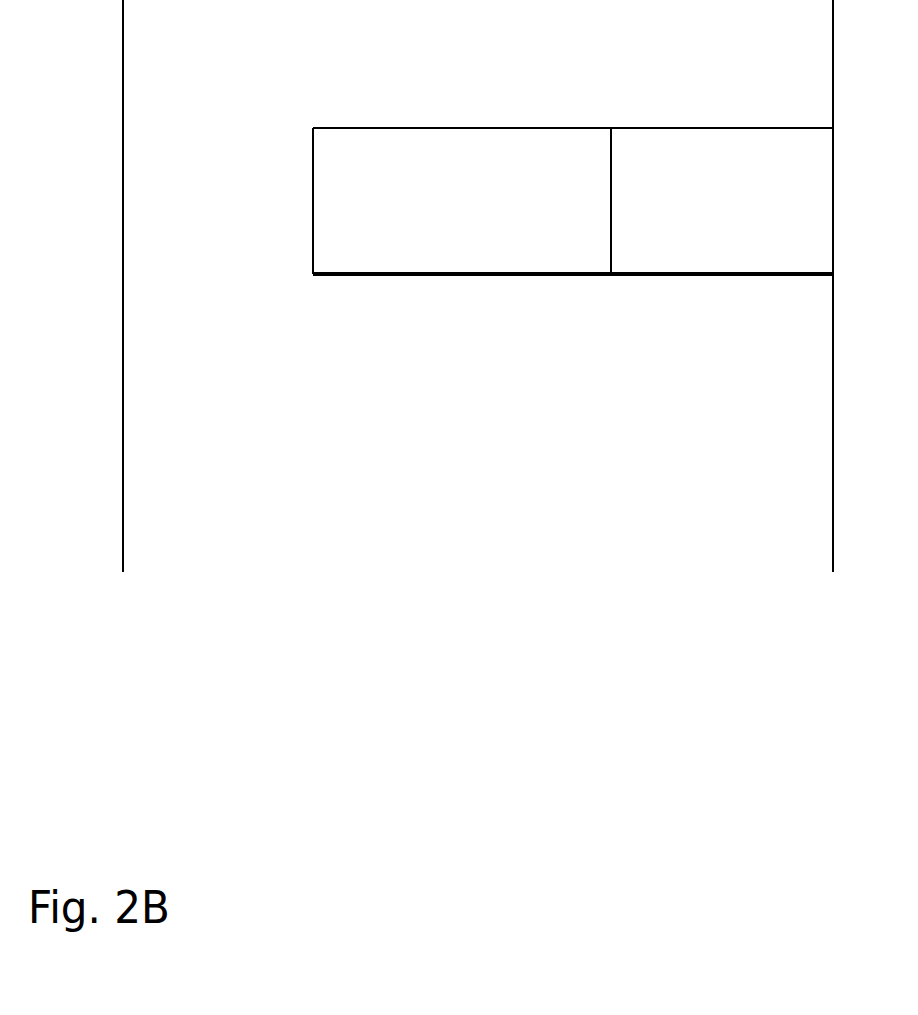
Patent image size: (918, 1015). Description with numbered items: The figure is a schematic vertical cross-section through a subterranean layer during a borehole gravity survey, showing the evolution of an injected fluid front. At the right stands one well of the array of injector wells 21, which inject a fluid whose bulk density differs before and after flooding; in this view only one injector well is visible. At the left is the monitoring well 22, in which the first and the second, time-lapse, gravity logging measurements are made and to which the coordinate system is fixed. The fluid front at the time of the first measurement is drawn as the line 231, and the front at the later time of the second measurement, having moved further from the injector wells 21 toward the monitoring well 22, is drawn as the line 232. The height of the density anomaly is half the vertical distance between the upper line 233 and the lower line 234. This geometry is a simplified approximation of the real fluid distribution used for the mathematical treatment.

The injector wells 21 is at (833, 452).
The monitoring well 22 is at (123, 393).
The fluid front at time t1 231 is at (611, 172).
The fluid front at time t2 232 is at (313, 200).
The upper boundary line of density anomaly 233 is at (449, 128).
The lower boundary line of density anomaly 234 is at (520, 275).